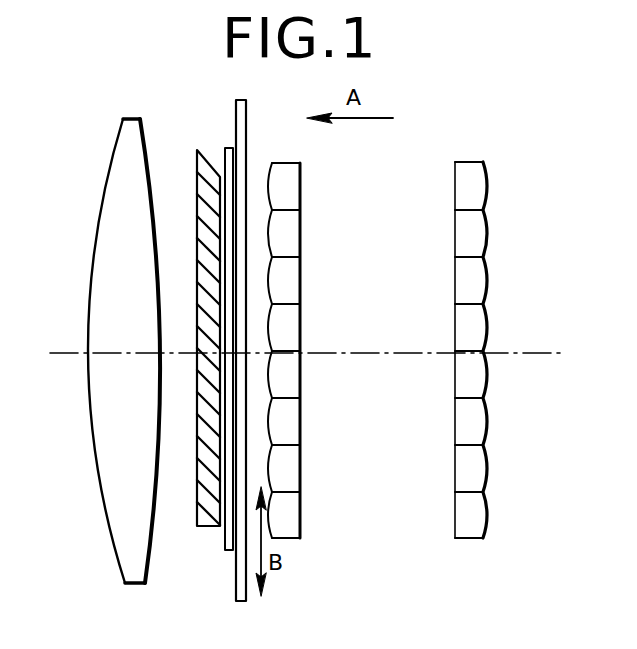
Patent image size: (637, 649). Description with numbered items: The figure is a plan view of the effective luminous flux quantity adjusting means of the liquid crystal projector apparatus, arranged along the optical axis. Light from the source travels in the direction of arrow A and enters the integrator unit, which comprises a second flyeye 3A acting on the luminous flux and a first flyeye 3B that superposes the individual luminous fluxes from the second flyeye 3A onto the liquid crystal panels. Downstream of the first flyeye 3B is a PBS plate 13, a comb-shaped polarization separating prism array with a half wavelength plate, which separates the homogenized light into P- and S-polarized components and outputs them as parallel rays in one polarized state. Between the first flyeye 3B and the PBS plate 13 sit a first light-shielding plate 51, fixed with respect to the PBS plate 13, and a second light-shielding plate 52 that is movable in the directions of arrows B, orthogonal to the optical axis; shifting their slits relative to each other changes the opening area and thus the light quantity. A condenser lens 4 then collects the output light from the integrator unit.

The condenser lens 4 is at (123, 120).
The PBS plate 13 is at (197, 150).
The first light-shielding plate 51 is at (229, 550).
The second light-shielding plate 52 is at (245, 601).
The second flyeye 3A is at (483, 162).
The first flyeye 3B is at (300, 163).